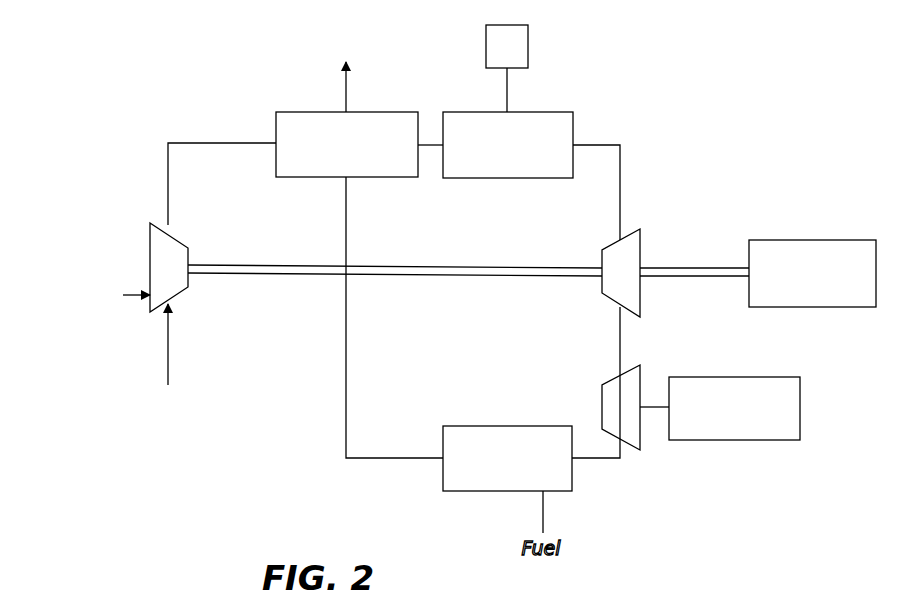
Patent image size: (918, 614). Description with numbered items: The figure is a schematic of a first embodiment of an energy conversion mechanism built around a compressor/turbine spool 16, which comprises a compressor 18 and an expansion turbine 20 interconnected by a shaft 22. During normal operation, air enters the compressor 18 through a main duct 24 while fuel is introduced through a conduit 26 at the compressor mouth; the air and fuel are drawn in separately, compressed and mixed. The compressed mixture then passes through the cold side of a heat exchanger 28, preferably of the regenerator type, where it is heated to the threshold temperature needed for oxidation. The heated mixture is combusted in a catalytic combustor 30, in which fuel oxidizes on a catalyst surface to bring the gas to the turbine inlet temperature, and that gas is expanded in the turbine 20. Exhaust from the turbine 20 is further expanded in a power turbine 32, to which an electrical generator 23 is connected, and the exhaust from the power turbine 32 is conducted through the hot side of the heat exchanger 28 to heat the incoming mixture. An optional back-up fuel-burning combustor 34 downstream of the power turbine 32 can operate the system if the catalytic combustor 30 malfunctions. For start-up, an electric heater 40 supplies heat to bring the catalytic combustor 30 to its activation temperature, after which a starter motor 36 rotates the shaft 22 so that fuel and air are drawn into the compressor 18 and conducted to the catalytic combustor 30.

The compressor/turbine spool 16 is at (336, 284).
The compressor 18 is at (183, 295).
The expansion turbine 20 is at (645, 240).
The shaft 22 is at (490, 279).
The electrical generator 23 is at (801, 400).
The main duct 24 is at (170, 333).
The conduit 26 is at (128, 300).
The heat exchanger 28 is at (275, 168).
The catalytic combustor 30 is at (565, 112).
The power turbine 32 is at (641, 440).
The back-up fuel-burning combustor 34 is at (573, 480).
The starter motor 36 is at (829, 240).
The electric heater 40 is at (529, 38).